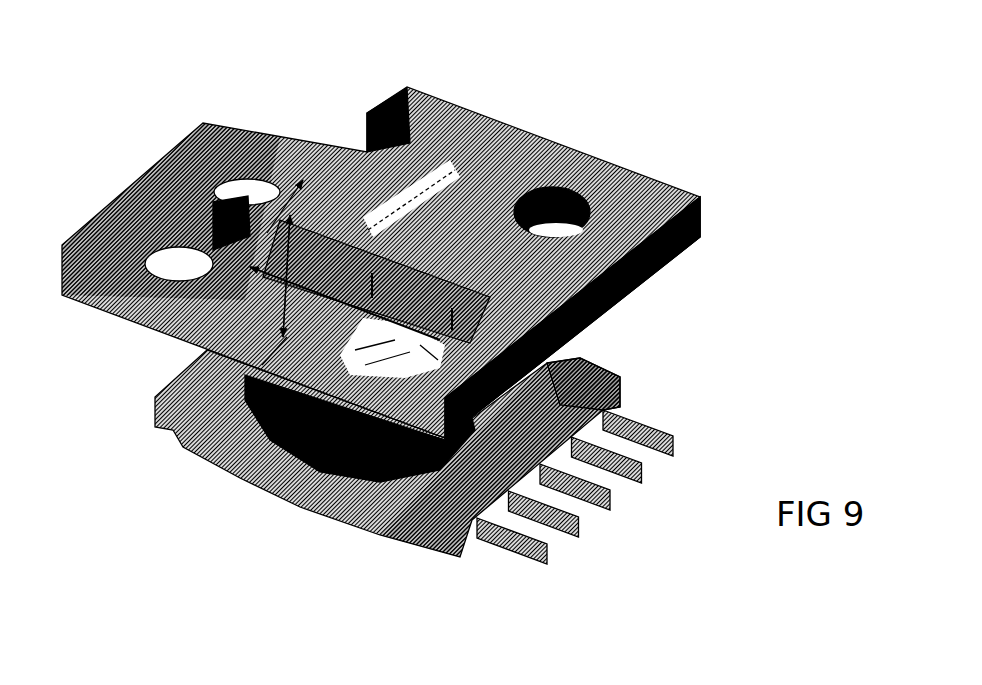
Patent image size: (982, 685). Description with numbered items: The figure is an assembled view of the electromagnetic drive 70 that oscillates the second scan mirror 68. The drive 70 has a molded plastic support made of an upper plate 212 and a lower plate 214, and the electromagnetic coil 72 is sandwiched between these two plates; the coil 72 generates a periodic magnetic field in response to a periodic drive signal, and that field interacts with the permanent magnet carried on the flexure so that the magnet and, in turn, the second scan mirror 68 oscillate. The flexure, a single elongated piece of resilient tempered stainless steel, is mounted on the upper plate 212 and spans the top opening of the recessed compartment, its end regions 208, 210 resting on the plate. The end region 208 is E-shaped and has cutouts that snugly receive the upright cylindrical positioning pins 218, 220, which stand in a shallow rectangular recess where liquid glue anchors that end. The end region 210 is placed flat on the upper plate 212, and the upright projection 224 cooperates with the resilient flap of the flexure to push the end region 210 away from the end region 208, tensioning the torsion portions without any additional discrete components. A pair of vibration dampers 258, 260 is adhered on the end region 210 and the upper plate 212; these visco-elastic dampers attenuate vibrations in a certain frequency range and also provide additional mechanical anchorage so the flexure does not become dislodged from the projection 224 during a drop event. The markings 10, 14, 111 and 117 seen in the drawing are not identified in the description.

The sensing axis direction 10 is at (272, 272).
The sensor substrate 14 is at (370, 269).
The second scan mirror 68 is at (463, 300).
The electromagnetic drive 70 is at (506, 600).
The electromagnetic coil 72 is at (347, 463).
The sensing element 111 is at (465, 321).
The sensing element 117 is at (381, 287).
The end region 208 is at (550, 352).
The end region 210 is at (115, 222).
The upper plate 212 is at (640, 175).
The lower plate 214 is at (387, 481).
The positioning pin 218 is at (620, 380).
The positioning pin 220 is at (507, 313).
The upright projection 224 is at (253, 217).
The vibration damper 258 is at (163, 240).
The vibration damper 260 is at (232, 183).